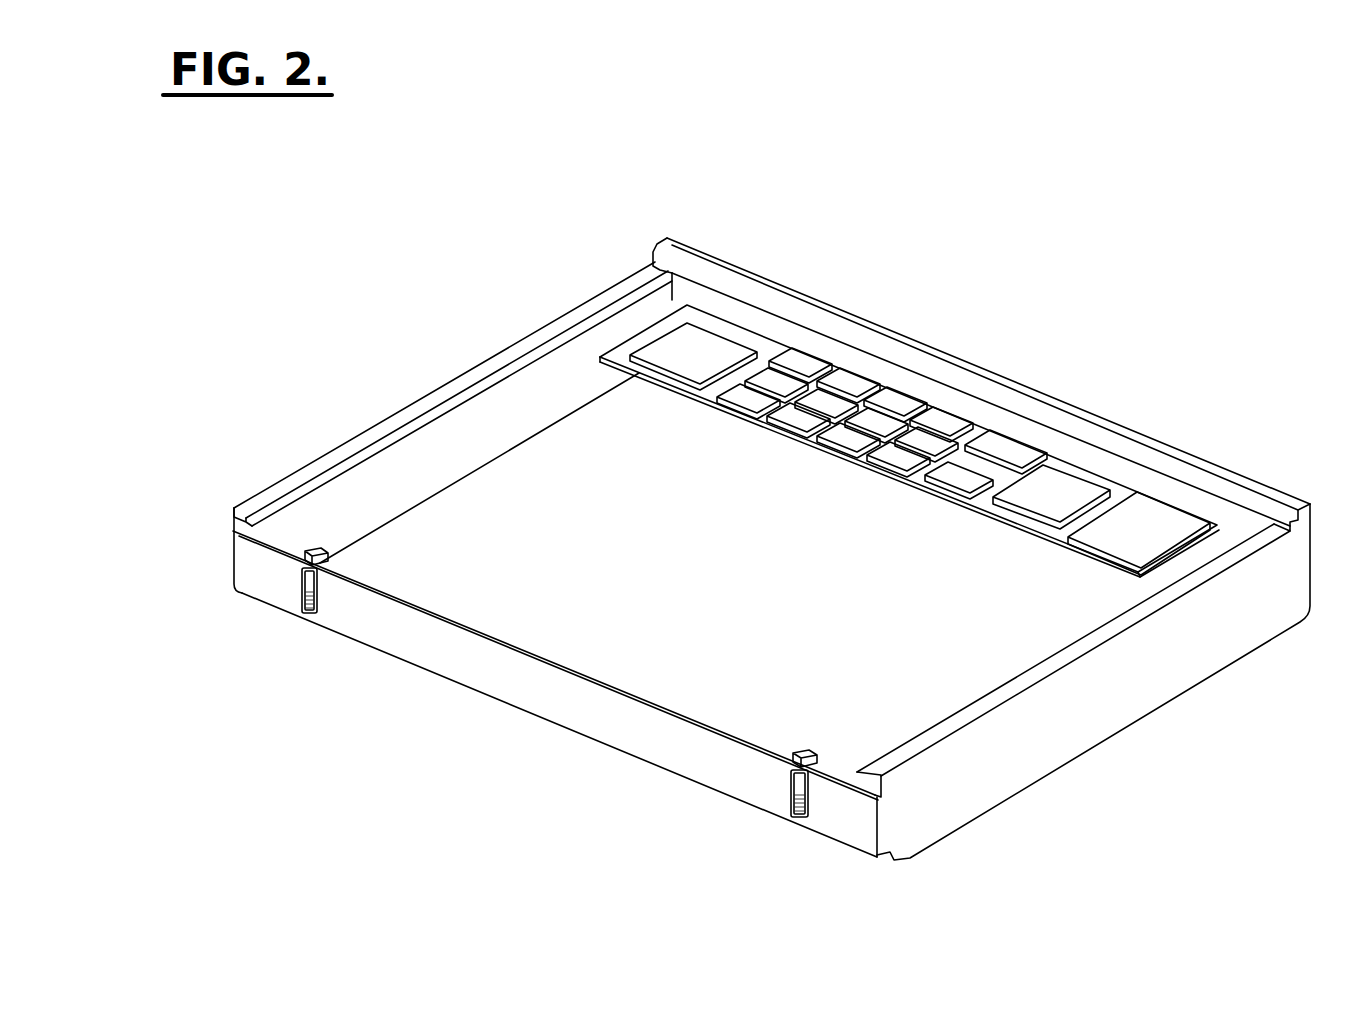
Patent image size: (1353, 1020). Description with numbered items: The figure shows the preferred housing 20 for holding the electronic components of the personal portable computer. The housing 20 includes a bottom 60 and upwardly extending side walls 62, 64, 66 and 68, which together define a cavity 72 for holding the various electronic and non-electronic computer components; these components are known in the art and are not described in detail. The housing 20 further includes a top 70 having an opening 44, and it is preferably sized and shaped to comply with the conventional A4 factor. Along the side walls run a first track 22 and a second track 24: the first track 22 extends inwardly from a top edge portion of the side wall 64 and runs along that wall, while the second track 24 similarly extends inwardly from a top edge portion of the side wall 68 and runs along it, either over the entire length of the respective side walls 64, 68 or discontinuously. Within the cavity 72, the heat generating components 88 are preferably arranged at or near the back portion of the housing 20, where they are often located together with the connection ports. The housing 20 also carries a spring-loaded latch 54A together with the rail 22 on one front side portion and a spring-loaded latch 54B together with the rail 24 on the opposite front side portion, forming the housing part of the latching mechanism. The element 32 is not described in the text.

The housing 20 is at (437, 353).
The first track 22 is at (1263, 527).
The second track 24 is at (672, 293).
The base plate 32 is at (585, 668).
The opening 44 is at (1034, 426).
The spring-loaded latch 54A is at (802, 750).
The spring-loaded latch 54B is at (300, 556).
The bottom 60 is at (547, 717).
The side wall 62 is at (928, 380).
The side wall 64 is at (1077, 725).
The side wall 66 is at (693, 750).
The side wall 68 is at (232, 567).
The top 70 is at (430, 615).
The cavity 72 is at (1010, 572).
The heat generating components 88 is at (767, 353).